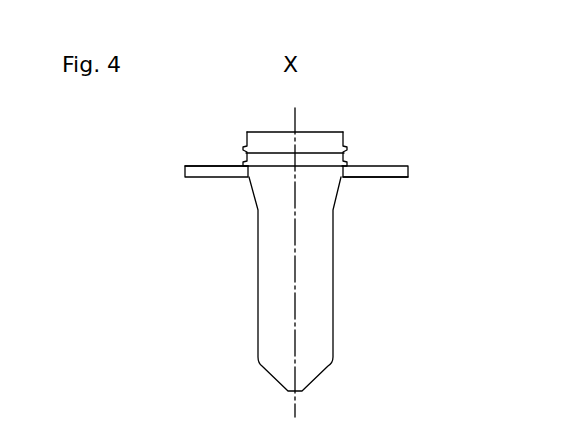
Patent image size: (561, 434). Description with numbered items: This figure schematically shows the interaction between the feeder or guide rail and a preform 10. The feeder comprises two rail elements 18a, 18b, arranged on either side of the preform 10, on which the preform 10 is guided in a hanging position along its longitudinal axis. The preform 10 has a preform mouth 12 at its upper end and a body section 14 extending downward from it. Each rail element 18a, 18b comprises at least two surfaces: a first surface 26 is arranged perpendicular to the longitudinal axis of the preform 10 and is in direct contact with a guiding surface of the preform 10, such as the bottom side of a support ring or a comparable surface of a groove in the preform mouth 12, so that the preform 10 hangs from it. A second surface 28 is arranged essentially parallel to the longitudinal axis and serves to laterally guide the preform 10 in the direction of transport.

The preform 10 is at (347, 112).
The preform mouth 12 is at (333, 145).
The body section 14 is at (272, 313).
The rail element 18a is at (200, 178).
The rail element 18b is at (388, 177).
The first surface 26 is at (218, 165).
The second surface 28 is at (343, 177).